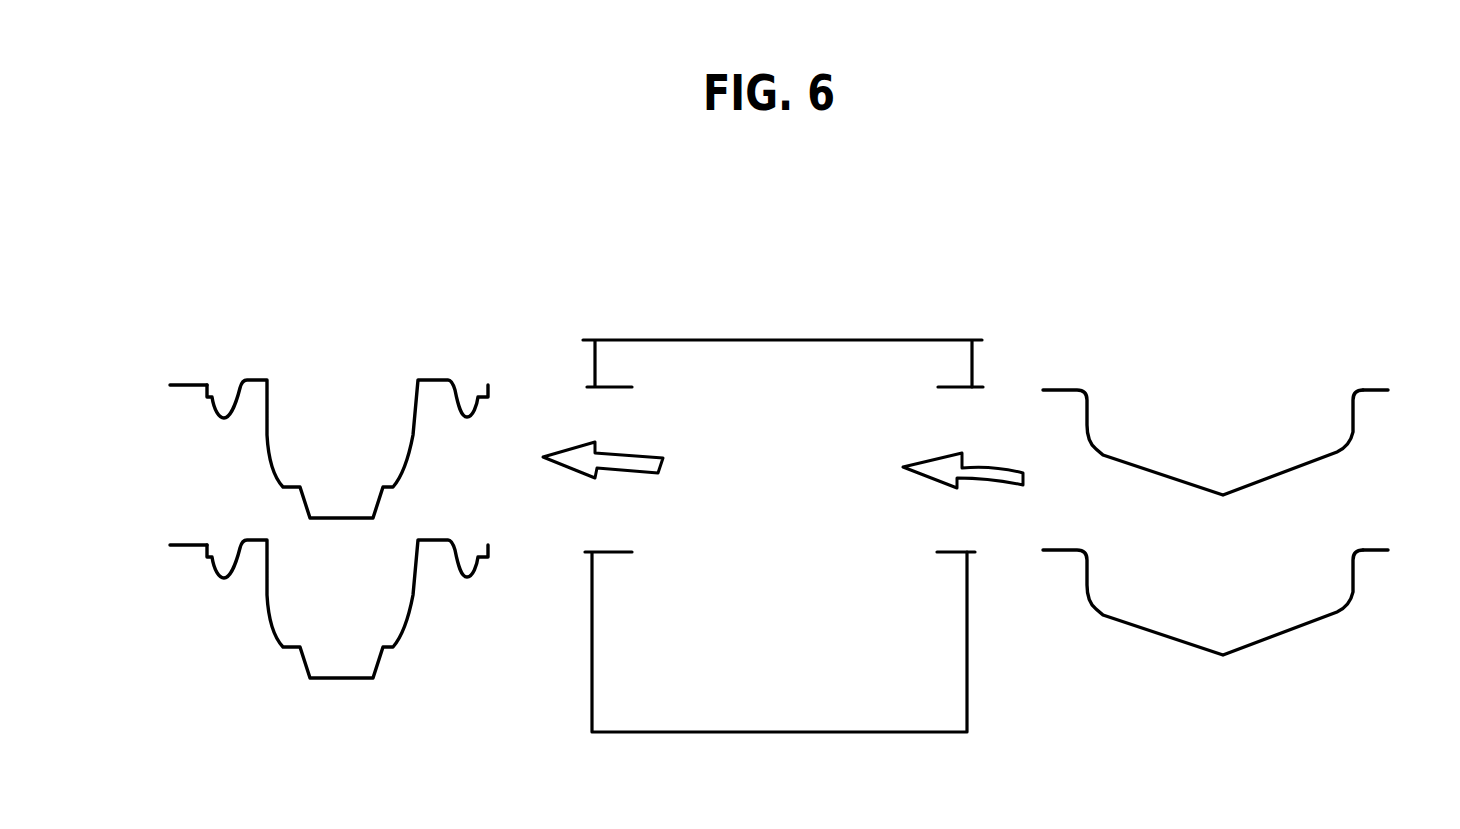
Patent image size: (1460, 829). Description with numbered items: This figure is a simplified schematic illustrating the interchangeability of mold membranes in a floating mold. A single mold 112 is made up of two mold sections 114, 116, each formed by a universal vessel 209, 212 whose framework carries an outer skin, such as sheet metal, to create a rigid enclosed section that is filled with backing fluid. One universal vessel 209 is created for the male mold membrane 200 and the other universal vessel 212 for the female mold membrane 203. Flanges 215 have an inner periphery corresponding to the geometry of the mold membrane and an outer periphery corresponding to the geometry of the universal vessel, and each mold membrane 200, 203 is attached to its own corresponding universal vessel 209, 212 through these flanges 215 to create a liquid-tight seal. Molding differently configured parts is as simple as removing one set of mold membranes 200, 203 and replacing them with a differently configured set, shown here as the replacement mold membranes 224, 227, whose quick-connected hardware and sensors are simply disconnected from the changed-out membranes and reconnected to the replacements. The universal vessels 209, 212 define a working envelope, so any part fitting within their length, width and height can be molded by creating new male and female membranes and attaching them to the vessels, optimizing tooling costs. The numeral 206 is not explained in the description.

The mold 112 is at (523, 303).
The mold section 114 is at (826, 316).
The mold section 116 is at (822, 675).
The male mold membrane 200 is at (270, 451).
The female mold membrane 203 is at (273, 622).
The flange 206 is at (185, 386).
The universal vessel 209 is at (873, 339).
The universal vessel 212 is at (938, 735).
The flanges 215 is at (952, 388).
The replacement mold membrane 224 is at (1183, 641).
The replacement mold membrane 227 is at (1158, 473).